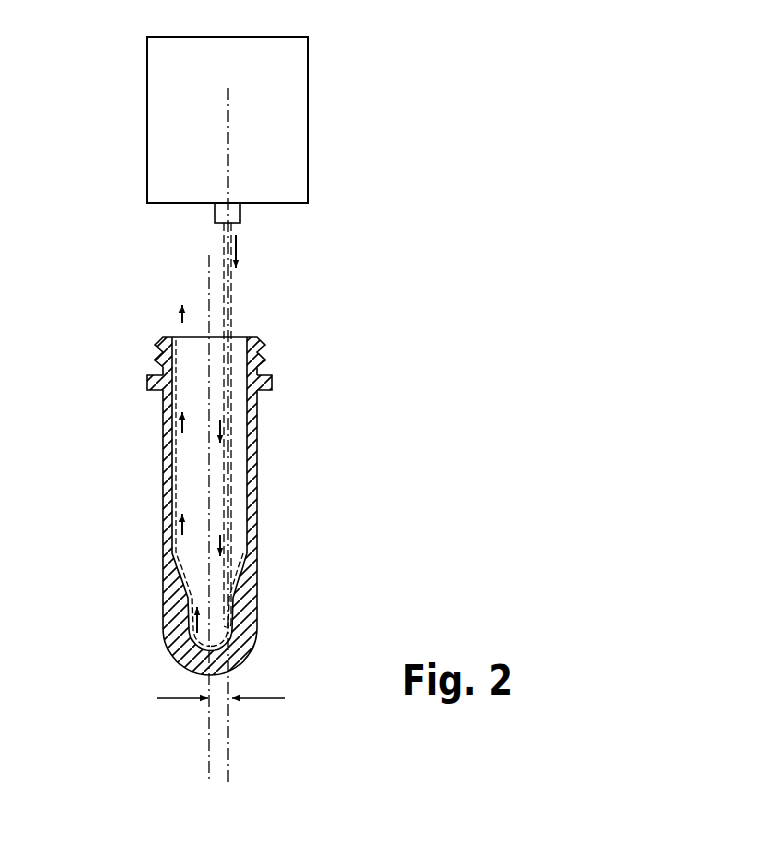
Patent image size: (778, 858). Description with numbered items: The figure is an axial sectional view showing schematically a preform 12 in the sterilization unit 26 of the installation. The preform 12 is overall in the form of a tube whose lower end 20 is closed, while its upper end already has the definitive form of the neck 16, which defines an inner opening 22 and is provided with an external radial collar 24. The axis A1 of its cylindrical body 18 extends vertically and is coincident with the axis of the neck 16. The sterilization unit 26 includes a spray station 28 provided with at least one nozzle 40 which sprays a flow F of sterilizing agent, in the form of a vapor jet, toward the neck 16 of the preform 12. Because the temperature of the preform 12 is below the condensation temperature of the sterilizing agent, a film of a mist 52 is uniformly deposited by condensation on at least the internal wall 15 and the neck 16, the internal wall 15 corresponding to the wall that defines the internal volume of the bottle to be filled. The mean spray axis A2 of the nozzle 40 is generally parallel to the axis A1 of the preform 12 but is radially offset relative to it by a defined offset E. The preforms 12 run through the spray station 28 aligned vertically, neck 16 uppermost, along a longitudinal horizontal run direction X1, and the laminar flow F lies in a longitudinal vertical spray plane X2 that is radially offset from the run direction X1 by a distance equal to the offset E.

The preform 12 is at (157, 478).
The internal wall 15 is at (240, 473).
The neck 16 is at (159, 344).
The cylindrical body 18 is at (170, 432).
The lower end 20 is at (242, 640).
The inner opening 22 is at (238, 343).
The external radial collar 24 is at (263, 379).
The sterilization unit 26 is at (304, 112).
The spray station 28 is at (284, 140).
The nozzle 40 is at (248, 216).
The film of mist 52 is at (240, 520).
The flow of sterilizing agent F is at (216, 243).
The run direction X1 is at (215, 368).
The spray plane X2 is at (233, 732).
The offset E is at (232, 699).
The axis of the preform A1 is at (192, 525).
The mean spray axis A2 is at (248, 441).